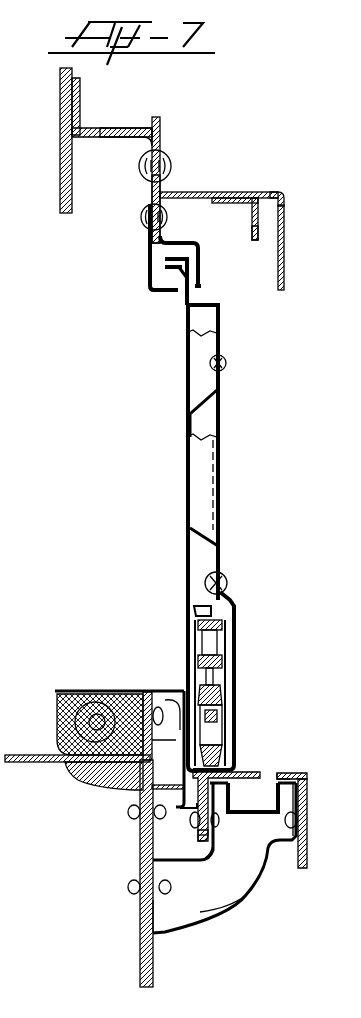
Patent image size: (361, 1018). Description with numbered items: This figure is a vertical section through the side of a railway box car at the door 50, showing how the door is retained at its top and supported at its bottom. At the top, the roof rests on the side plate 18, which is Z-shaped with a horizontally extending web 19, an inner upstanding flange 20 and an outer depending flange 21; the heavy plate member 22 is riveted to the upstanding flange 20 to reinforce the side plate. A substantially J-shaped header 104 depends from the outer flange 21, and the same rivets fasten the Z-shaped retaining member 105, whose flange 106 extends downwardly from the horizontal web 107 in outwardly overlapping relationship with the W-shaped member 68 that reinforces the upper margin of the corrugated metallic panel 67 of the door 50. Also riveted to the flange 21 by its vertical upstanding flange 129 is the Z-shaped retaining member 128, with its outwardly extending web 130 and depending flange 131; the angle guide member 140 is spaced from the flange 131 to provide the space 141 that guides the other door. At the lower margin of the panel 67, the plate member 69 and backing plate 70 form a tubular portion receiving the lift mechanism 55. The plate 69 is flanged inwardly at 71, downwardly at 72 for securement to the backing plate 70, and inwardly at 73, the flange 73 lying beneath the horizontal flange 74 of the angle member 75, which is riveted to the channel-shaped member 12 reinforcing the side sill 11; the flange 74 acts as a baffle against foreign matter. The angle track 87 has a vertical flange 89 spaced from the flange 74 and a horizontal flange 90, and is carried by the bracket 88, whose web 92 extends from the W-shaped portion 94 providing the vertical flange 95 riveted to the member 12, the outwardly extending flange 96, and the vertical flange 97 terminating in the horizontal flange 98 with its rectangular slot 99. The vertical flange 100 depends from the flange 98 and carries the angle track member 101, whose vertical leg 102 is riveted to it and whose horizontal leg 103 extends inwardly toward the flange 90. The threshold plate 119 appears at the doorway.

The side sill 11 is at (153, 750).
The channel-shaped member 12 is at (138, 960).
The side plate 18 is at (82, 128).
The horizontally extending web 19 is at (132, 128).
The inner upstanding flange 20 is at (80, 88).
The outer depending flange 21 is at (148, 187).
The heavy plate member 22 is at (62, 168).
The door 50 is at (213, 418).
The lift mechanism 55 is at (230, 668).
The corrugated metallic panel 67 is at (225, 483).
The W-shaped member 68 is at (222, 310).
The plate member 69 is at (232, 607).
The backing plate 70 is at (187, 594).
The inward flange 71 is at (222, 822).
The downward flange 72 is at (183, 792).
The inward flange 73 is at (192, 808).
The horizontal flange 74 is at (168, 785).
The angle member 75 is at (137, 797).
The angle track 87 is at (200, 835).
The bracket 88 is at (233, 910).
The flange 89 is at (205, 860).
The flange 90 is at (248, 770).
The web 92 is at (207, 903).
The W-shaped portion 94 is at (213, 853).
The vertical flange 95 is at (157, 912).
The outwardly extending flange 96 is at (182, 860).
The vertical flange 97 is at (213, 838).
The horizontal flange 98 is at (280, 783).
The rectangular slot 99 is at (248, 803).
The vertical flange 100 is at (295, 836).
The angle track member 101 is at (303, 772).
The vertical leg 102 is at (307, 805).
The horizontal leg 103 is at (278, 772).
The J-shaped header 104 is at (147, 288).
The Z-shaped retaining member 105 is at (200, 245).
The flange 106 is at (202, 287).
The horizontal web 107 is at (178, 239).
The threshold plate 119 is at (94, 692).
The Z-shaped retaining member 128 is at (270, 192).
The vertical upstanding flange 129 is at (160, 138).
The outwardly extending web 130 is at (188, 190).
The depending flange 131 is at (285, 230).
The angle guide member 140 is at (247, 204).
The space 141 is at (268, 227).